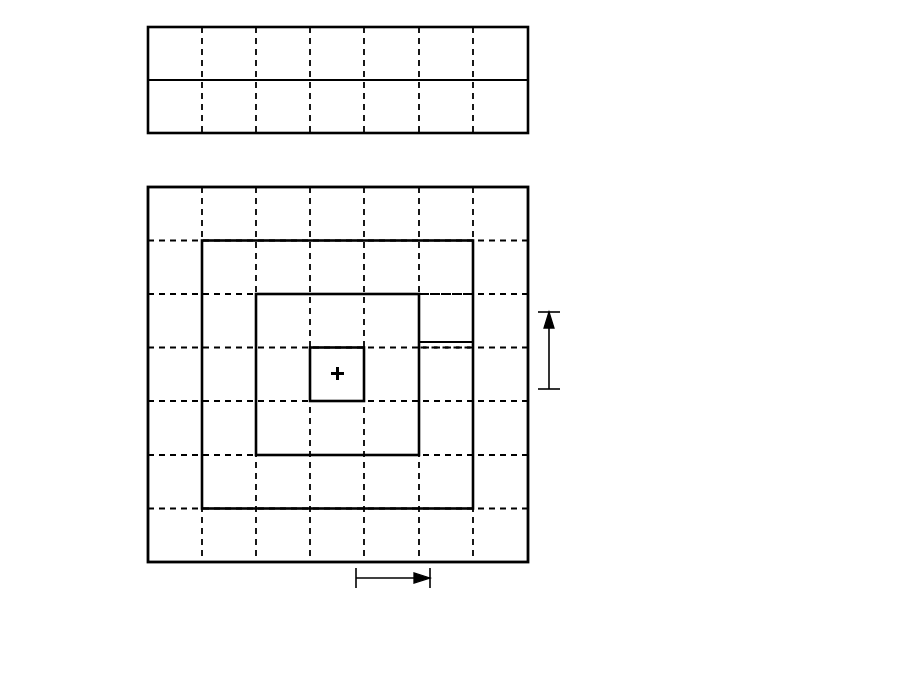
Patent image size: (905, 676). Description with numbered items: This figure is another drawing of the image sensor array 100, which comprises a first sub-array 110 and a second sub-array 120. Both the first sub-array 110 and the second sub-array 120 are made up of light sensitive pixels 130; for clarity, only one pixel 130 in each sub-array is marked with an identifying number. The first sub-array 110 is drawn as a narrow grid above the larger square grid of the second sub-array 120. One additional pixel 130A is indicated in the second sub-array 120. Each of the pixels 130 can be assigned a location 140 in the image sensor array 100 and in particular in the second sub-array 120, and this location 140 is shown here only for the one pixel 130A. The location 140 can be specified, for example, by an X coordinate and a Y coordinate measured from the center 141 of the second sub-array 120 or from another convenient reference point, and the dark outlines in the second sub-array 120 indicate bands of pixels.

The image sensor array 100 is at (108, 517).
The first sub-array 110 is at (528, 58).
The second sub-array 120 is at (528, 211).
The light sensitive pixel 130 is at (165, 53).
The additional pixel 130A is at (446, 321).
The location 140 is at (440, 318).
The center 141 is at (328, 365).